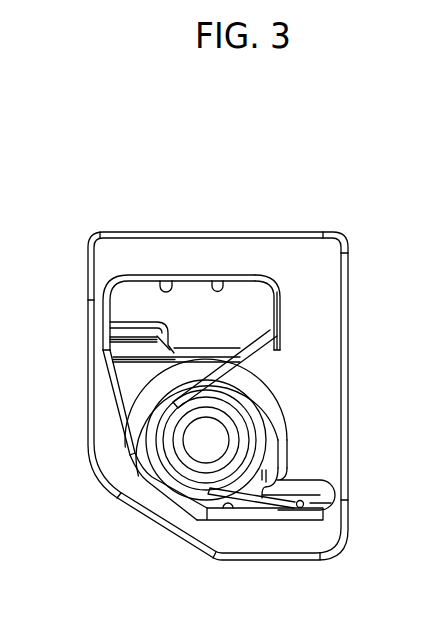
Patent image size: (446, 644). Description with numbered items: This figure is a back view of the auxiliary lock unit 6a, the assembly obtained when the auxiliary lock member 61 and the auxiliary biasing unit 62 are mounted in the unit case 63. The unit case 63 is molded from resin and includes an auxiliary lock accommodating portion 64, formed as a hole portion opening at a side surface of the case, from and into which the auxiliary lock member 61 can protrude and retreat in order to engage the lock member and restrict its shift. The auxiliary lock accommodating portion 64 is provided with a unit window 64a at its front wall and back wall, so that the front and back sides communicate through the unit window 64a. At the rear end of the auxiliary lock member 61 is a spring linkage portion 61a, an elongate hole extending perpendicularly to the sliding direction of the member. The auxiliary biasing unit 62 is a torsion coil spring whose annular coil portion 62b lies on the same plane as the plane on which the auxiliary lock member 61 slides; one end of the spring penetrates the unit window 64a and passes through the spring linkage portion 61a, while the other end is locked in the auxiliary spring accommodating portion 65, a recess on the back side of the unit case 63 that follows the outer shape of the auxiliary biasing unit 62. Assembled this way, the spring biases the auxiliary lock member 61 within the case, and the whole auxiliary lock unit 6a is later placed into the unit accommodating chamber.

The auxiliary lock unit 6a is at (322, 175).
The auxiliary lock member 61 is at (135, 298).
The spring linkage portion 61a is at (279, 280).
The auxiliary biasing unit 62 is at (262, 363).
The annular coil portion 62b is at (247, 417).
The unit case 63 is at (348, 302).
The auxiliary lock accommodating portion 64 is at (165, 275).
The unit window 64a is at (219, 275).
The auxiliary spring accommodating portion 65 is at (226, 508).